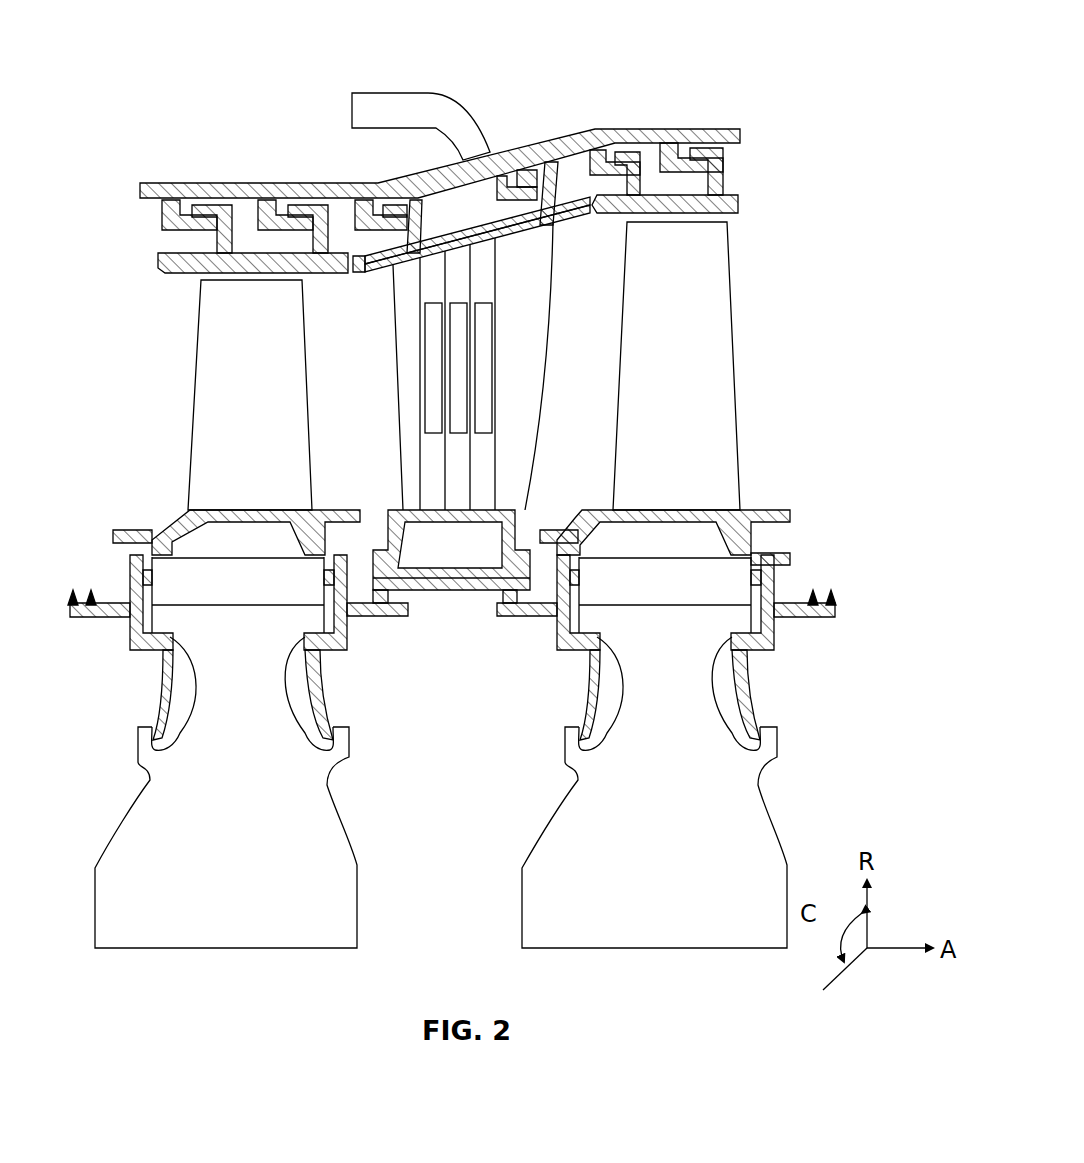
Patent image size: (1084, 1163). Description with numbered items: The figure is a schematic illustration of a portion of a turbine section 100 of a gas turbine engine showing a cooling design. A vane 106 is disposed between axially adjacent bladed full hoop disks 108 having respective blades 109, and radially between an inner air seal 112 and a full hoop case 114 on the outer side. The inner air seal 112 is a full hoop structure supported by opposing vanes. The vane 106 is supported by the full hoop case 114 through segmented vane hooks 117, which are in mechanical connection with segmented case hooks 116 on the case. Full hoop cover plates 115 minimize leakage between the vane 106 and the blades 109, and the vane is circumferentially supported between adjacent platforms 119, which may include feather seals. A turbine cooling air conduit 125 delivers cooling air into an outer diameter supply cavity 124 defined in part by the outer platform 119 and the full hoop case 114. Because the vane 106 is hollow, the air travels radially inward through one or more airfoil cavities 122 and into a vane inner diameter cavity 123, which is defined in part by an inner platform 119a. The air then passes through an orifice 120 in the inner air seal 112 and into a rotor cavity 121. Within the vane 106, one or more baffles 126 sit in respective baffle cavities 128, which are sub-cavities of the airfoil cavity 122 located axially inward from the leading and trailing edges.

The turbine section 100 is at (176, 47).
The vane 106 is at (522, 355).
The bladed full hoop disk 108 is at (130, 843).
The blade 109 is at (195, 398).
The inner air seal 112 is at (540, 575).
The full hoop case 114 is at (740, 134).
The full hoop cover plate 115 is at (322, 682).
The segmented case hook 116 is at (370, 190).
The segmented vane hook 117 is at (407, 200).
The platform 119 is at (588, 214).
The inner platform 119a is at (388, 517).
The orifice 120 is at (440, 578).
The rotor cavity 121 is at (468, 766).
The airfoil cavity 122 is at (485, 455).
The vane inner diameter cavity 123 is at (449, 552).
The outer diameter supply cavity 124 is at (466, 188).
The turbine cooling air conduit 125 is at (375, 93).
The baffle 126 is at (432, 360).
The baffle cavity 128 is at (428, 420).